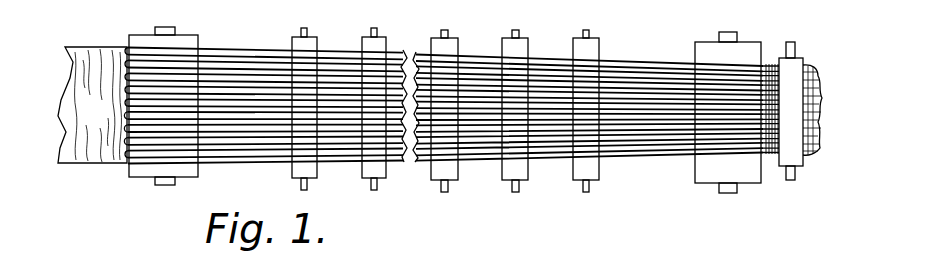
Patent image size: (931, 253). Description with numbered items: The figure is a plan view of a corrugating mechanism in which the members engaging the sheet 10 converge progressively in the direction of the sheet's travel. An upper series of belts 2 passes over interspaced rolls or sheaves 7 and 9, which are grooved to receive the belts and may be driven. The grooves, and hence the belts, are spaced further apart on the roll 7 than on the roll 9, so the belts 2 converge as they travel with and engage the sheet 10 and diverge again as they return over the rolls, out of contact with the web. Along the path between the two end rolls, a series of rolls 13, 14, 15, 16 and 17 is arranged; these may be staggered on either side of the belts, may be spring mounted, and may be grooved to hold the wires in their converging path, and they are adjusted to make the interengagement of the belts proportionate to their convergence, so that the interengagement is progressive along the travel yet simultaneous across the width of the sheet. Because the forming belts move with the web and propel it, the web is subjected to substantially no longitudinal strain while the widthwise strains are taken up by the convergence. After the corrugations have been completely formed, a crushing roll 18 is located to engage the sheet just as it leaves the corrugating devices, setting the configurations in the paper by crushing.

The upper series of belts 2 is at (626, 60).
The roll or sheave 7 is at (181, 44).
The roll or sheave 9 is at (738, 172).
The sheet 10 is at (92, 105).
The roll 13 is at (310, 45).
The roll 14 is at (378, 44).
The roll 15 is at (450, 46).
The roll 16 is at (522, 48).
The roll 17 is at (590, 50).
The crushing roll 18 is at (793, 70).